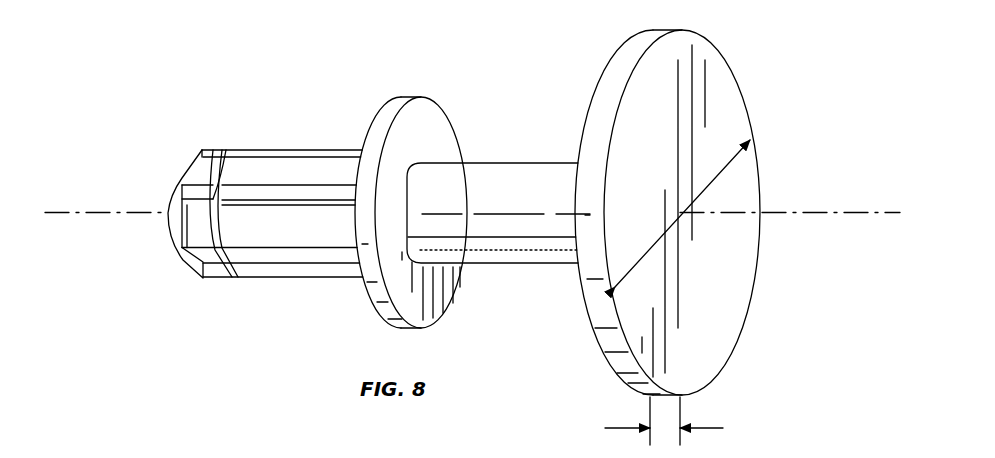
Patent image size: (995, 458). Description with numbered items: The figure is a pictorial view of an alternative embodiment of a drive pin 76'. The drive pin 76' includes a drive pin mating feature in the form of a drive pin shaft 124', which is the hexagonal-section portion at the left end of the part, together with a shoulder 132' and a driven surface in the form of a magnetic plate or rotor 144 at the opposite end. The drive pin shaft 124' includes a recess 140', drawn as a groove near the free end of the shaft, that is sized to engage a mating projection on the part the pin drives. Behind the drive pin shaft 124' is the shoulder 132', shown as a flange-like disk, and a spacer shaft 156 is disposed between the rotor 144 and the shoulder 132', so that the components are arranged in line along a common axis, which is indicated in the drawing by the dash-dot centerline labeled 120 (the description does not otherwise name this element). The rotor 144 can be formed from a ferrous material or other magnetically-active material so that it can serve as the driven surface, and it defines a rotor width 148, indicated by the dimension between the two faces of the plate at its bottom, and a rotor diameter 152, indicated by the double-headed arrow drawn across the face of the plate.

The central axis 120 is at (122, 208).
The drive pin shaft 124' is at (265, 245).
The recess 140' is at (194, 187).
The shoulder 132' is at (389, 194).
The spacer shaft 156 is at (495, 178).
The rotor 144 is at (627, 60).
The drive pin 76' is at (712, 198).
The rotor diameter 152 is at (724, 168).
The rotor width 148 is at (622, 427).